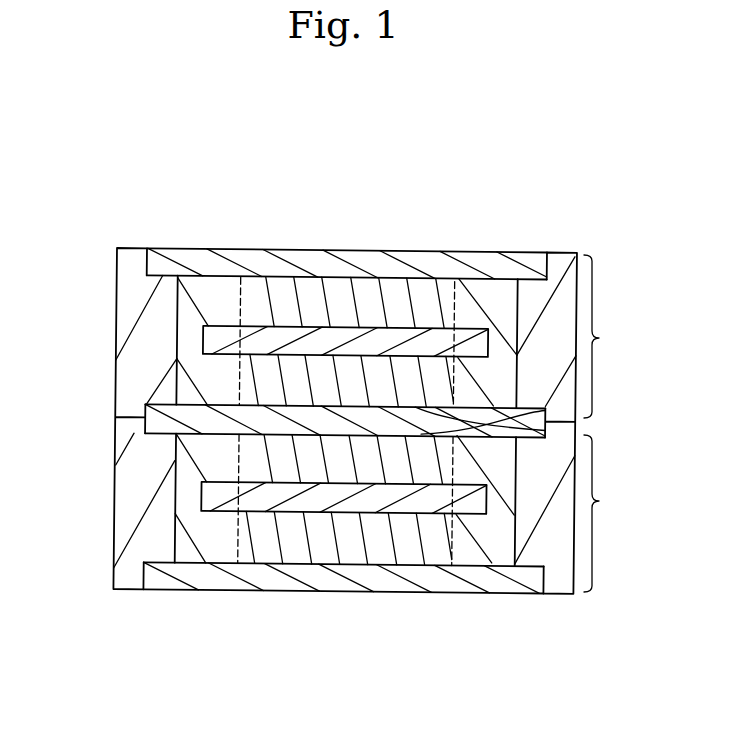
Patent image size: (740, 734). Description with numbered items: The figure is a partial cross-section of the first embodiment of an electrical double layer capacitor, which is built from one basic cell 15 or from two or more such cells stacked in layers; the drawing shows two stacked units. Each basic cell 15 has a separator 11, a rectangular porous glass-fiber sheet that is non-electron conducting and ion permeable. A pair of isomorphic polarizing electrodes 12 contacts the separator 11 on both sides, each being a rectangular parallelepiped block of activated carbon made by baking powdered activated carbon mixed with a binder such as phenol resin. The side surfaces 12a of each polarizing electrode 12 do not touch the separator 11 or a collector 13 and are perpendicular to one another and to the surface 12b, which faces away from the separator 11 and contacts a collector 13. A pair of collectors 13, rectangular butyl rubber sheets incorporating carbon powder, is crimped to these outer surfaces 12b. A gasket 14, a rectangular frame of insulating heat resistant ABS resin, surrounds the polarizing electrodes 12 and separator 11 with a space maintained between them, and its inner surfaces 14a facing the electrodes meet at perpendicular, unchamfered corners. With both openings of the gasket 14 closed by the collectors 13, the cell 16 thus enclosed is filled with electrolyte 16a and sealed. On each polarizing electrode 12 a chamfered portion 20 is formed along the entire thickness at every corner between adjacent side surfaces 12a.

The separator 11 is at (210, 340).
The polarizing electrode 12 is at (306, 292).
The surface of polarizing electrode 12a is at (240, 314).
The surface of polarizing electrode 12b is at (415, 280).
The collector 13 is at (388, 263).
The gasket 14 is at (137, 292).
The inner surface of gasket 14a is at (177, 394).
The basic cell 15 is at (608, 423).
The cell 16 is at (500, 307).
The electrolyte 16a is at (200, 293).
The chamfered portion 20 is at (224, 318).